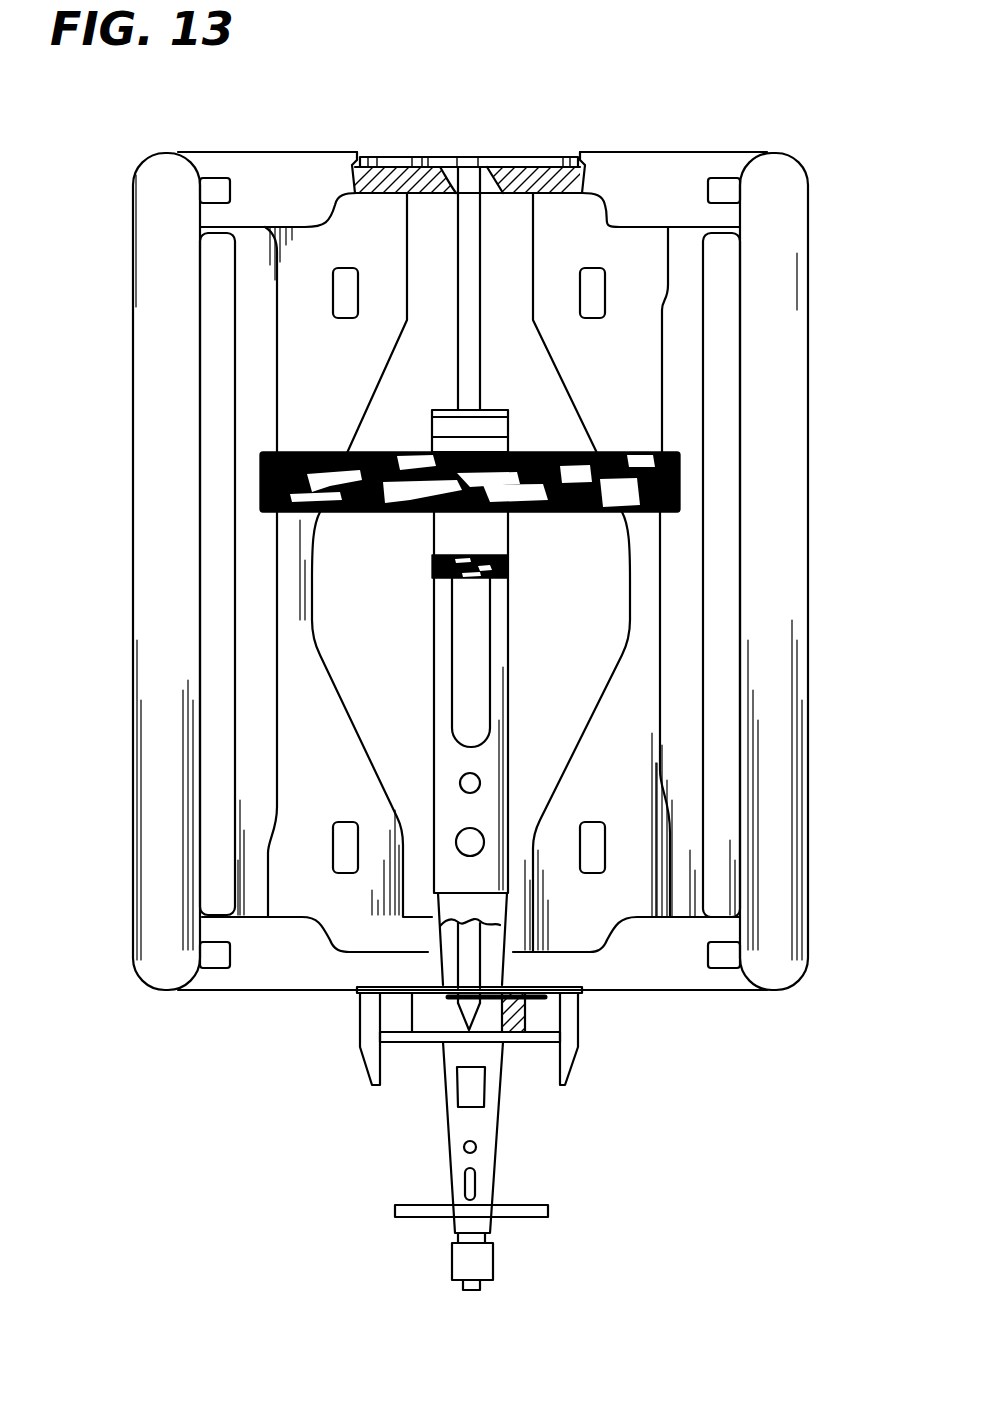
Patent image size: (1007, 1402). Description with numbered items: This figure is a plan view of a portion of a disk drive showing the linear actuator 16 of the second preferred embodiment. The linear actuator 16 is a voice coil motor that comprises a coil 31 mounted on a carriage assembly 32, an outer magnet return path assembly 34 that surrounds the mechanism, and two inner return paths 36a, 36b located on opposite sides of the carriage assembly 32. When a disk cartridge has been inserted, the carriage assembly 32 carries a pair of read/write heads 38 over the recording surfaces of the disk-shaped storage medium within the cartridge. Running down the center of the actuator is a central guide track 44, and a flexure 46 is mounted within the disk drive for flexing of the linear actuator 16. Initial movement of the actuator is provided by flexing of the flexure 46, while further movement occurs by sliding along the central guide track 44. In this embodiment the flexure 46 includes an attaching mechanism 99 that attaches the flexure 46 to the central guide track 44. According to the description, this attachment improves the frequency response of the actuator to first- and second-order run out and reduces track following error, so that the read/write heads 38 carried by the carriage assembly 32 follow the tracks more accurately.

The linear actuator 16 is at (520, 340).
The coil 31 is at (682, 470).
The carriage assembly 32 is at (503, 540).
The outer magnet return path assembly 34 is at (687, 175).
The inner return path 36a is at (293, 898).
The inner return path 36b is at (656, 917).
The read/write heads 38 is at (490, 1290).
The central guide track 44 is at (464, 205).
The flexure 46 is at (598, 993).
The attaching mechanism 99 is at (492, 1012).